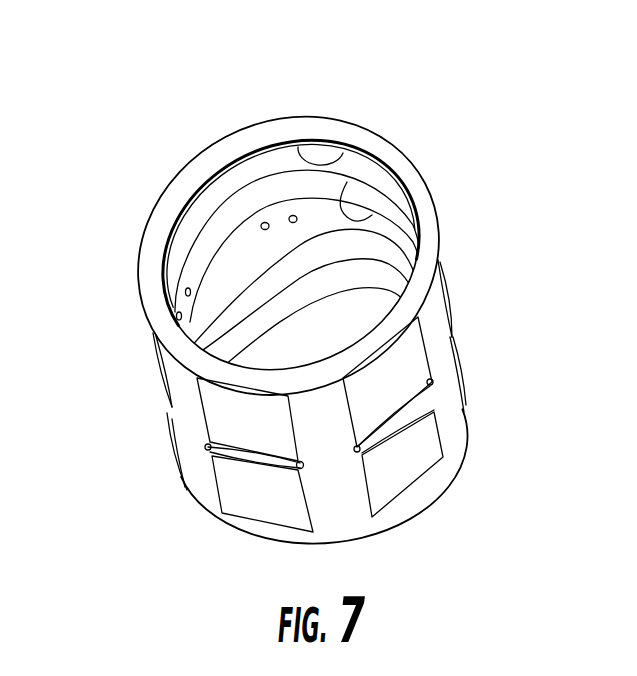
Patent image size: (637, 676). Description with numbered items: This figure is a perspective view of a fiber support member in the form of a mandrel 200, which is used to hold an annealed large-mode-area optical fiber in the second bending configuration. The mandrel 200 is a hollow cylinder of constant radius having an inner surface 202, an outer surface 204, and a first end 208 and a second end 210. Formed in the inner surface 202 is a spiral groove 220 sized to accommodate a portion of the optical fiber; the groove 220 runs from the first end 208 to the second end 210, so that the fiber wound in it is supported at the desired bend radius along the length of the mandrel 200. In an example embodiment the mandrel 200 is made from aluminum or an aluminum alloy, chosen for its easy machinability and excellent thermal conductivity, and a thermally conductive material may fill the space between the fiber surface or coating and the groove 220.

The mandrel 200 is at (151, 133).
The inner surface 202 is at (347, 182).
The outer surface 204 is at (433, 338).
The first end 208 is at (152, 254).
The second end 210 is at (431, 480).
The spiral groove 220 is at (352, 159).